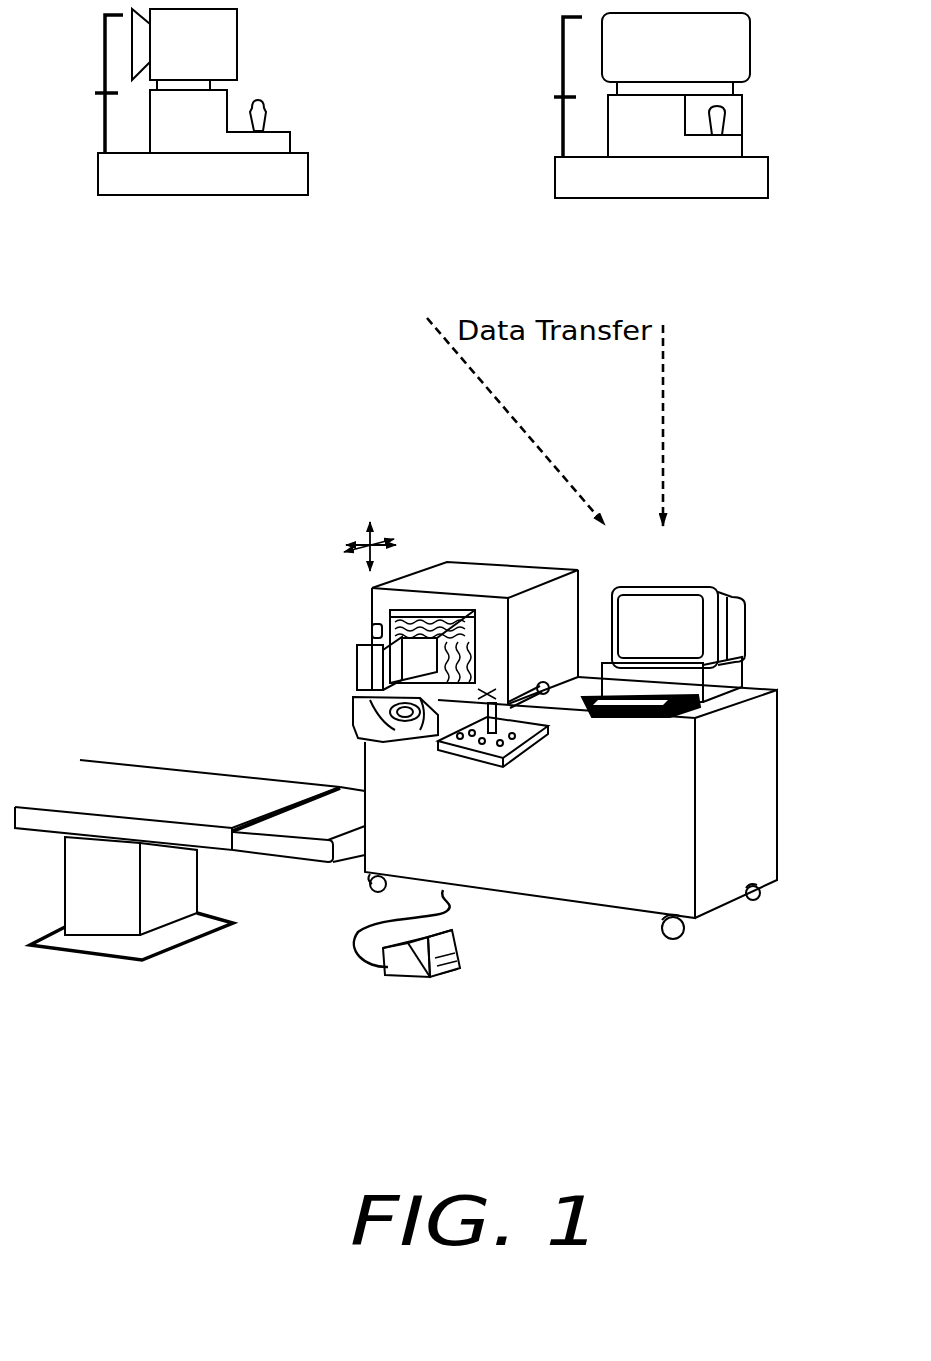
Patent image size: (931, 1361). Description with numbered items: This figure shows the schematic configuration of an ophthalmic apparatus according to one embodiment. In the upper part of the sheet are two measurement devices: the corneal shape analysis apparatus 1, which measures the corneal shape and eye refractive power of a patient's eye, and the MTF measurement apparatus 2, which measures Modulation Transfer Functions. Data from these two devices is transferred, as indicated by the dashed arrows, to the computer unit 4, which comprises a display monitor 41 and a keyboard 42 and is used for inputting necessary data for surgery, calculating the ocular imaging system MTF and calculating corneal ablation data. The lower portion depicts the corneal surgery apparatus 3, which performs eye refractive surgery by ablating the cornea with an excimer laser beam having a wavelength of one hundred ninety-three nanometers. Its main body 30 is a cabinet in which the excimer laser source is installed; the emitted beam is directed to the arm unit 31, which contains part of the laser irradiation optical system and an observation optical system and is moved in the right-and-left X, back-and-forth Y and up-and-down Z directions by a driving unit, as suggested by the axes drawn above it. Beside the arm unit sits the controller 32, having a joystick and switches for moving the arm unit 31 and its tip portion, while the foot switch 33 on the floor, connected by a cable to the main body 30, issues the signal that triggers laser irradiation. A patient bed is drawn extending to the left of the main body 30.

The corneal shape analysis apparatus 1 is at (273, 213).
The MTF measurement apparatus 2 is at (733, 216).
The corneal surgery apparatus 3 is at (396, 750).
The computer unit 4 is at (724, 662).
The main body of the surgery apparatus 30 is at (605, 885).
The arm unit 31 is at (343, 710).
The controller 32 is at (537, 735).
The foot switch 33 is at (447, 945).
The display monitor 41 is at (670, 622).
The keyboard 42 is at (687, 705).